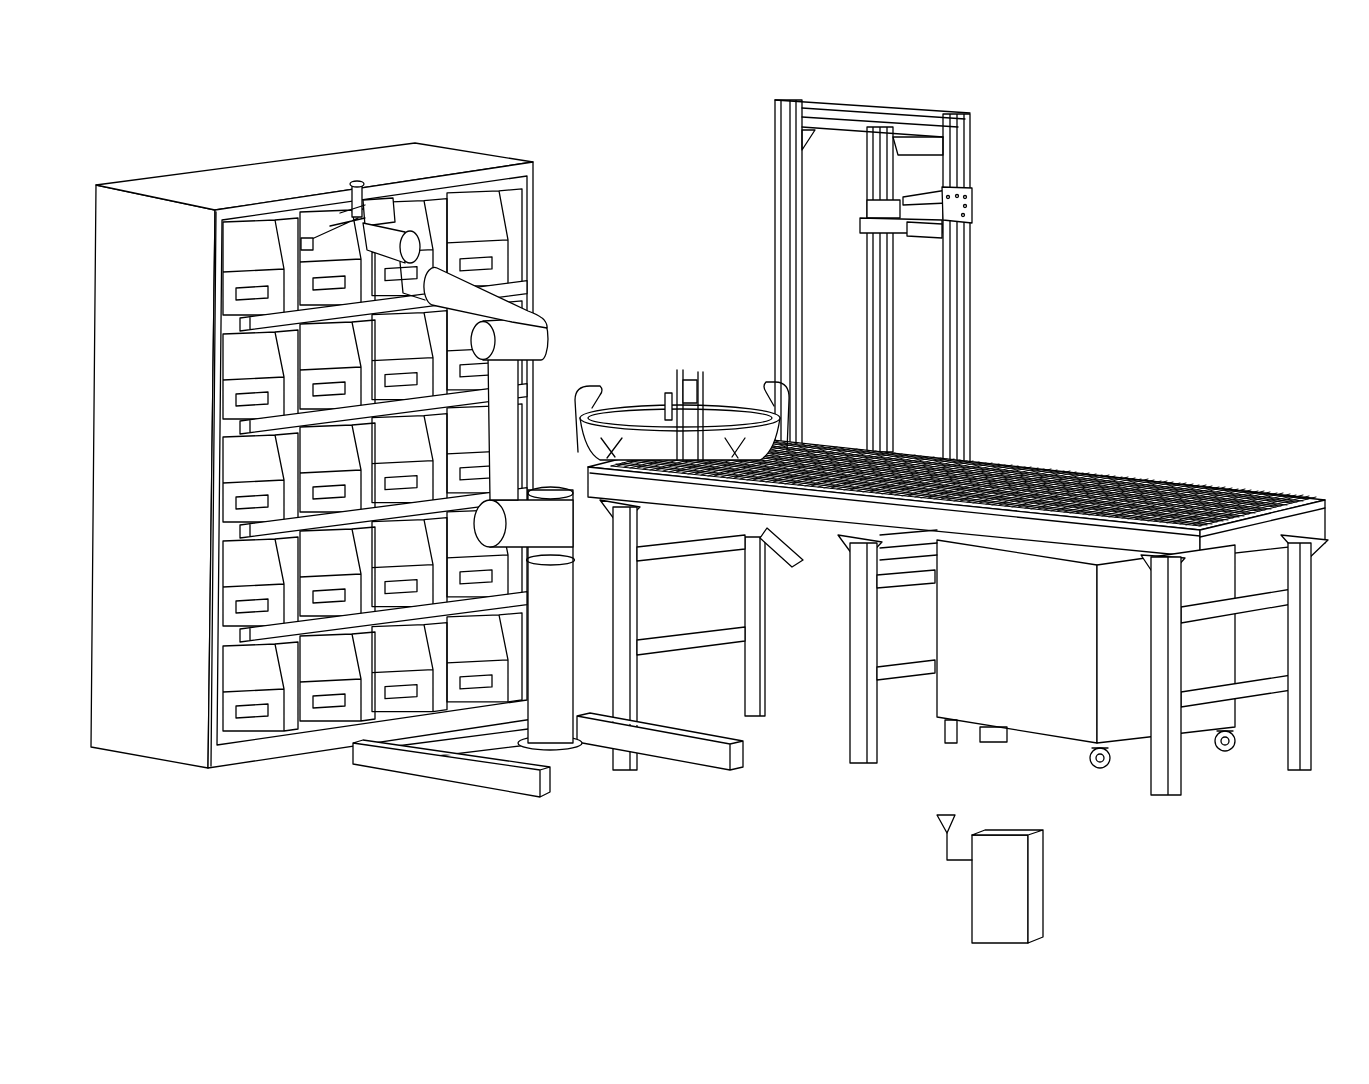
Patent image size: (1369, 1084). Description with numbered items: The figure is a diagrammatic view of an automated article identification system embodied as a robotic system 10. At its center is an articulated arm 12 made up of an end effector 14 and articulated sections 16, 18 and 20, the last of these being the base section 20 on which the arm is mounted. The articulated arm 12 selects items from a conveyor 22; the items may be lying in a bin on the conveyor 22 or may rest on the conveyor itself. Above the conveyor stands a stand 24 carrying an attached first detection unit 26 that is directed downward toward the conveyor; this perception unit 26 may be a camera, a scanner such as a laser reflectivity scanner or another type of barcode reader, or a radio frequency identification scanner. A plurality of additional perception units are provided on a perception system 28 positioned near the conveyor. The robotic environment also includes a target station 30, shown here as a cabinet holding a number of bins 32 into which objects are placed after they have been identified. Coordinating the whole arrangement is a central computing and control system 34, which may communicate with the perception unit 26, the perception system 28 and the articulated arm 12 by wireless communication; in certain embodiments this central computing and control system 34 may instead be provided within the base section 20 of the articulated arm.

The robotic system 10 is at (700, 100).
The articulated arm 12 is at (568, 254).
The end effector 14 is at (388, 207).
The articulated section 16 is at (528, 292).
The articulated section 18 is at (515, 419).
The base section 20 is at (566, 649).
The conveyor 22 is at (1092, 418).
The stand 24 is at (970, 284).
The first detection unit 26 is at (867, 183).
The perception system 28 is at (700, 338).
The target station 30 is at (318, 113).
The bins 32 is at (261, 263).
The central computing and control system 34 is at (1035, 870).